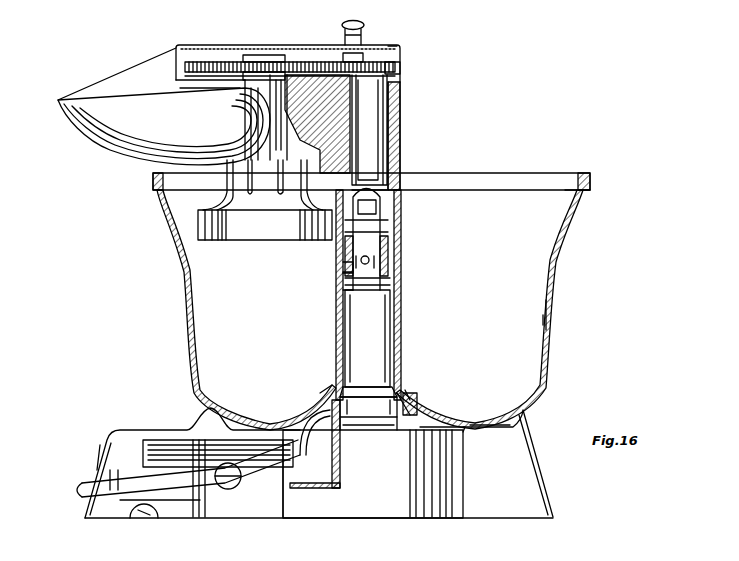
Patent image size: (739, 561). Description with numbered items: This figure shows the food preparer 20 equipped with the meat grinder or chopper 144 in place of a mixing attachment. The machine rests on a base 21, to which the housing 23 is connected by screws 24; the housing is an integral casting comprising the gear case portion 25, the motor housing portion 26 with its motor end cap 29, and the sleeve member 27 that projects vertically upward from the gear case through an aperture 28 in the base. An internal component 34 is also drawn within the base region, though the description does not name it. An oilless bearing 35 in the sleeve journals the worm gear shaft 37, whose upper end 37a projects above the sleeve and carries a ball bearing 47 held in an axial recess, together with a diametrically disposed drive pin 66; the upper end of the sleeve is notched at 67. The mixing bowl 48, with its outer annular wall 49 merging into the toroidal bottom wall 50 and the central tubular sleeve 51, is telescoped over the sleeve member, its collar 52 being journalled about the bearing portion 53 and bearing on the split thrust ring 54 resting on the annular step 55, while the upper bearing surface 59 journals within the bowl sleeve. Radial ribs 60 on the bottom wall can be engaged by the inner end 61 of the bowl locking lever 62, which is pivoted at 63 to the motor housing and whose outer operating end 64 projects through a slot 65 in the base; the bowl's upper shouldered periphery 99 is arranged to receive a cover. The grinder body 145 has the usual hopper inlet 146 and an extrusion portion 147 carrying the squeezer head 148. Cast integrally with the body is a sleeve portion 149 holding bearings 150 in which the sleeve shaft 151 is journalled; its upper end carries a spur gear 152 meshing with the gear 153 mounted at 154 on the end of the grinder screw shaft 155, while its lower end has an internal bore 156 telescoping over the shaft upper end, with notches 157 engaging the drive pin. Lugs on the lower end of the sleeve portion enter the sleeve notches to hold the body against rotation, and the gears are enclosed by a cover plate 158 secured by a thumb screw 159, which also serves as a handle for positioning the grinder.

The food preparer 20 is at (550, 337).
The base 21 is at (547, 488).
The housing 23 is at (455, 468).
The screws 24 is at (450, 427).
The gear case portion 25 is at (373, 474).
The motor housing portion 26 is at (201, 478).
The sleeve member 27 is at (368, 343).
The aperture 28 is at (407, 433).
The motor end cap 29 is at (218, 478).
The spring 34 is at (120, 480).
The oilless bearing 35 is at (333, 292).
The worm gear shaft 37 is at (370, 278).
The upper end of shaft 37a is at (370, 212).
The ball bearing 47 is at (393, 188).
The mixing bowl 48 is at (552, 288).
The outer annular wall 49 is at (542, 320).
The bottom wall 50 is at (487, 413).
The central tubular sleeve 51 is at (401, 323).
The collar 52 is at (410, 393).
The bearing portion 53 is at (356, 420).
The thrust ring 54 is at (383, 423).
The annular step 55 is at (368, 407).
The upper bearing surface 59 is at (387, 270).
The radial ribs 60 is at (320, 393).
The inner end of lever 61 is at (315, 434).
The bowl locking lever 62 is at (182, 488).
The pivot 63 is at (260, 465).
The outer operating end 64 is at (82, 488).
The slot 65 is at (97, 470).
The drive pin 66 is at (340, 275).
The notches 67 is at (335, 280).
The upper shouldered periphery 99 is at (585, 190).
The meat grinder 144 is at (407, 53).
The grinder body 145 is at (243, 120).
The hopper inlet 146 is at (83, 90).
The extrusion portion 147 is at (260, 205).
The squeezer head 148 is at (232, 230).
The sleeve portion 149 is at (395, 122).
The bearings 150 is at (397, 90).
The sleeve shaft 151 is at (372, 152).
The spur gear 152 is at (393, 68).
The gear 153 is at (307, 62).
The gear mounting 154 is at (260, 57).
The grinder screw shaft 155 is at (262, 80).
The internal bore 156 is at (377, 190).
The notches 157 is at (380, 250).
The cover plate 158 is at (393, 47).
The thumb screw 159 is at (363, 27).